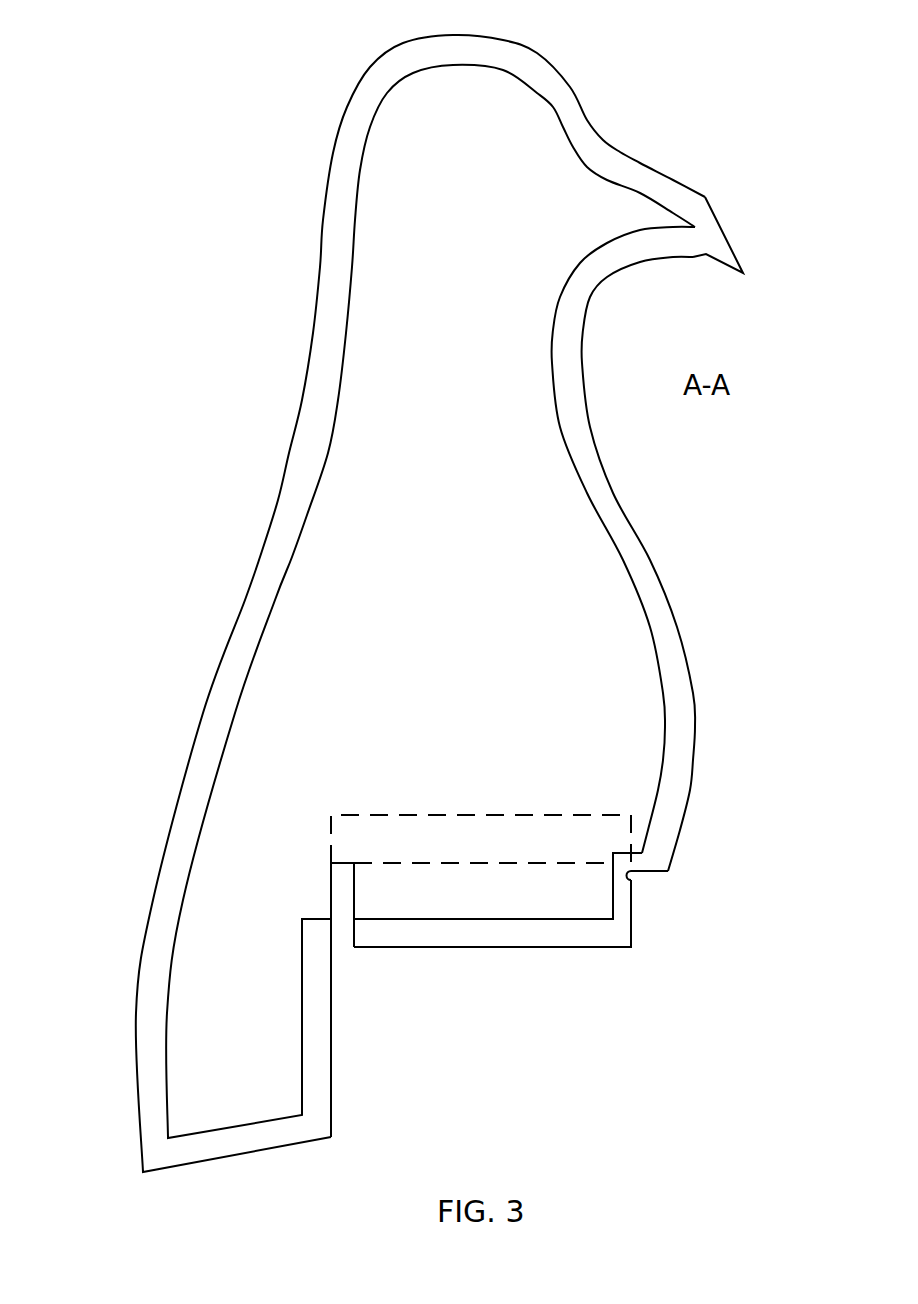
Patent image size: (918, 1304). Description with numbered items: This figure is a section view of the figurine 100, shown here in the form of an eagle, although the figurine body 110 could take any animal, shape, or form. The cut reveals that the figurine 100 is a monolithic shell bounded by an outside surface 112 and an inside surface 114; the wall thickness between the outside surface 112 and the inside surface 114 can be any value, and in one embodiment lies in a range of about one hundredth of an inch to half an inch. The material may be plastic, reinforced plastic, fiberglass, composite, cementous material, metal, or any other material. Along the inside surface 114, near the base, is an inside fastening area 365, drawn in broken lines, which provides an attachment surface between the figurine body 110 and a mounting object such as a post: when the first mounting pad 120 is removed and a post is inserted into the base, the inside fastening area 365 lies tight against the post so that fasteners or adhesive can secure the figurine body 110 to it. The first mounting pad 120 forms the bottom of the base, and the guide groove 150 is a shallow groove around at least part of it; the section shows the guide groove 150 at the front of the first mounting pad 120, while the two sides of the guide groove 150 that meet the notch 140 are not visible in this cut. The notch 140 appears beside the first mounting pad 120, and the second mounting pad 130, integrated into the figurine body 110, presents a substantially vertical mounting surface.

The figurine 100 is at (134, 44).
The figurine body 110 is at (288, 452).
The outside surface 112 is at (258, 555).
The inside surface 114 is at (303, 517).
The first mounting pad 120 is at (525, 948).
The second mounting pad 130 is at (333, 1120).
The notch 140 is at (340, 922).
The guide groove 150 is at (632, 878).
The inside fastening area 365 is at (622, 815).